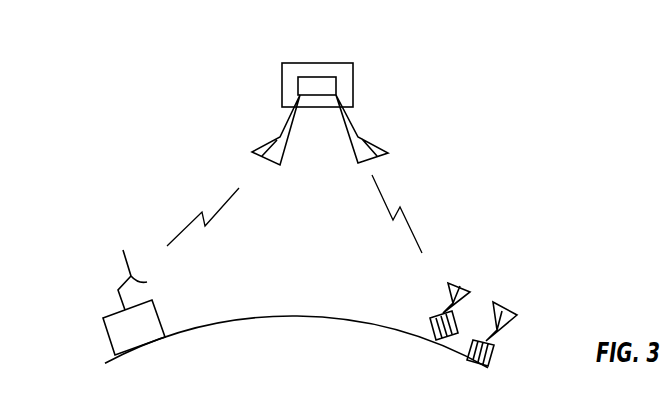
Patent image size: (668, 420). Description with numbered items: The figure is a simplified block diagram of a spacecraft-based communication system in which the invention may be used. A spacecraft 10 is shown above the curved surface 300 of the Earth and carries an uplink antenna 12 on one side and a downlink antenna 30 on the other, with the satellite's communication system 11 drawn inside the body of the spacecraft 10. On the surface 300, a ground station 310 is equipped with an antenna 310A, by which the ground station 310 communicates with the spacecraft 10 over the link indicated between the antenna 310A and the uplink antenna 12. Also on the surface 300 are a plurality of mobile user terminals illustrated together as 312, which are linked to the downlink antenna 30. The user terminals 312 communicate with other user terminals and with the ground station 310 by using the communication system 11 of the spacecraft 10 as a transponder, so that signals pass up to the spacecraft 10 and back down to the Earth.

The spacecraft 10 is at (353, 87).
The communication system 11 is at (306, 93).
The uplink antenna 12 is at (257, 135).
The downlink antenna 30 is at (390, 135).
The surface of the Earth 300 is at (312, 314).
The ground station 310 is at (103, 337).
The antenna 310A is at (122, 263).
The mobile user terminals 312 is at (452, 263).